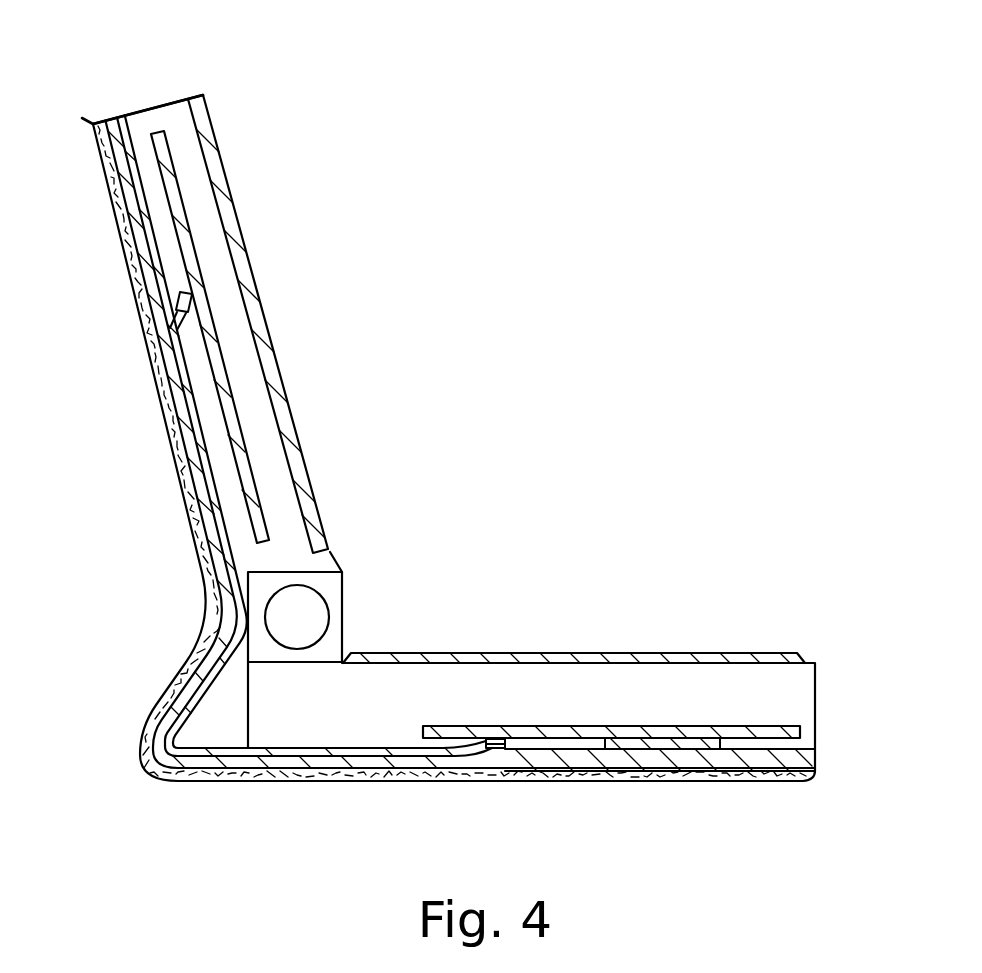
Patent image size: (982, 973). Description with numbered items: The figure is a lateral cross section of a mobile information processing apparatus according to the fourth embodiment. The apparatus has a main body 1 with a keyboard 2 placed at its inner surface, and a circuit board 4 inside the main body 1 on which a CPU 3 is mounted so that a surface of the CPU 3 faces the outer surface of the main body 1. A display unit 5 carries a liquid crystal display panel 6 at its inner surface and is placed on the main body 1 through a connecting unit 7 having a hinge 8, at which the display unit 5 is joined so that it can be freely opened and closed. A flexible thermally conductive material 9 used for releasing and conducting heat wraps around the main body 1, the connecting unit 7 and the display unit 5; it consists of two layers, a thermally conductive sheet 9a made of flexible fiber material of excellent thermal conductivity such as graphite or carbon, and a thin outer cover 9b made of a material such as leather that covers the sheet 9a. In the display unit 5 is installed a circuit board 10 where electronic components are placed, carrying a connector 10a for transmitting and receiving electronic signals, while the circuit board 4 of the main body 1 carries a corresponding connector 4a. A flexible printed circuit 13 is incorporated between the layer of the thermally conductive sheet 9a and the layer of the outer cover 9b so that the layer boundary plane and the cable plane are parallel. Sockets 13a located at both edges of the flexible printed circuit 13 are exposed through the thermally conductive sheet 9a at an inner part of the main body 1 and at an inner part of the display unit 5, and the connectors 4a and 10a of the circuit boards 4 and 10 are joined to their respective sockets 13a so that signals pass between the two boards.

The main body 1 is at (806, 682).
The keyboard 2 is at (700, 656).
The CPU 3 is at (680, 750).
The circuit board 4 is at (805, 733).
The connector 4a is at (497, 740).
The display unit 5 is at (185, 107).
The liquid crystal display panel 6 is at (231, 190).
The connecting unit 7 is at (330, 583).
The hinge 8 is at (317, 612).
The thermally conductive material 9 is at (100, 122).
The thermally conductive sheet 9a is at (816, 761).
The outer cover 9b is at (812, 785).
The circuit board 10 is at (158, 133).
The connector 10a is at (193, 300).
The flexible printed circuit 13 is at (485, 762).
The sockets 13a is at (178, 306).